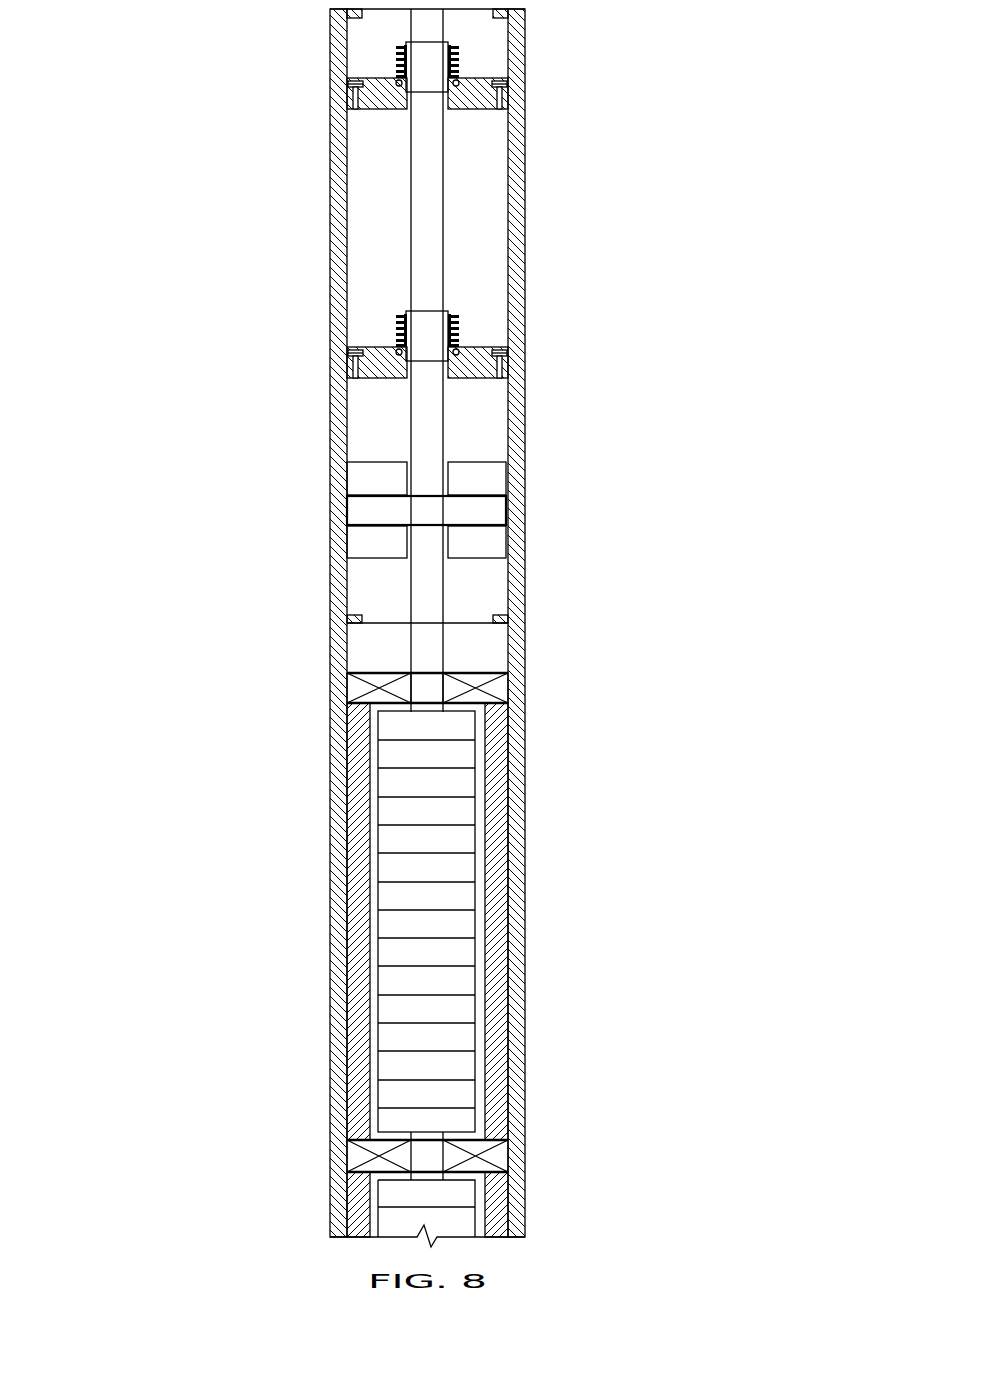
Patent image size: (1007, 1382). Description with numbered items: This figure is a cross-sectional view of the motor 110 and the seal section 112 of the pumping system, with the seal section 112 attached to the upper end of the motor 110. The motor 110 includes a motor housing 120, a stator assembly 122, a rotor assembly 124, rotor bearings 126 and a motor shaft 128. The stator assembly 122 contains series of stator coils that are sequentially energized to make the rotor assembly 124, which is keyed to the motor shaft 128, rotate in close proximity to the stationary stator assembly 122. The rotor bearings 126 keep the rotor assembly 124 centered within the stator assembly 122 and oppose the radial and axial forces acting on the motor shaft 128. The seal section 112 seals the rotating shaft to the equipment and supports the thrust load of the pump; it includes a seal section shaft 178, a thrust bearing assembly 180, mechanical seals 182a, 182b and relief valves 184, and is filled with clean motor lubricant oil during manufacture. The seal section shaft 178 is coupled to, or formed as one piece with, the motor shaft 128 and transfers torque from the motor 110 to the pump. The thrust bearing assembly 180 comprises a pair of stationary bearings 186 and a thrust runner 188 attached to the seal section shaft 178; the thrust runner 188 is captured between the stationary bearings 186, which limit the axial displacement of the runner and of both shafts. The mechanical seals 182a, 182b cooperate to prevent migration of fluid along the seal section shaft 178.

The motor 110 is at (242, 906).
The seal section 112 is at (168, 366).
The motor housing 120 is at (523, 1070).
The stator assembly 122 is at (495, 928).
The rotor assembly 124 is at (403, 817).
The rotor bearings 126 is at (353, 688).
The motor shaft 128 is at (418, 647).
The seal section shaft 178 is at (428, 245).
The thrust bearing assembly 180 is at (573, 527).
The mechanical seal 182a is at (458, 53).
The mechanical seal 182b is at (400, 316).
The relief valve 184 is at (353, 80).
The stationary bearings 186 is at (472, 470).
The thrust runner 188 is at (467, 511).